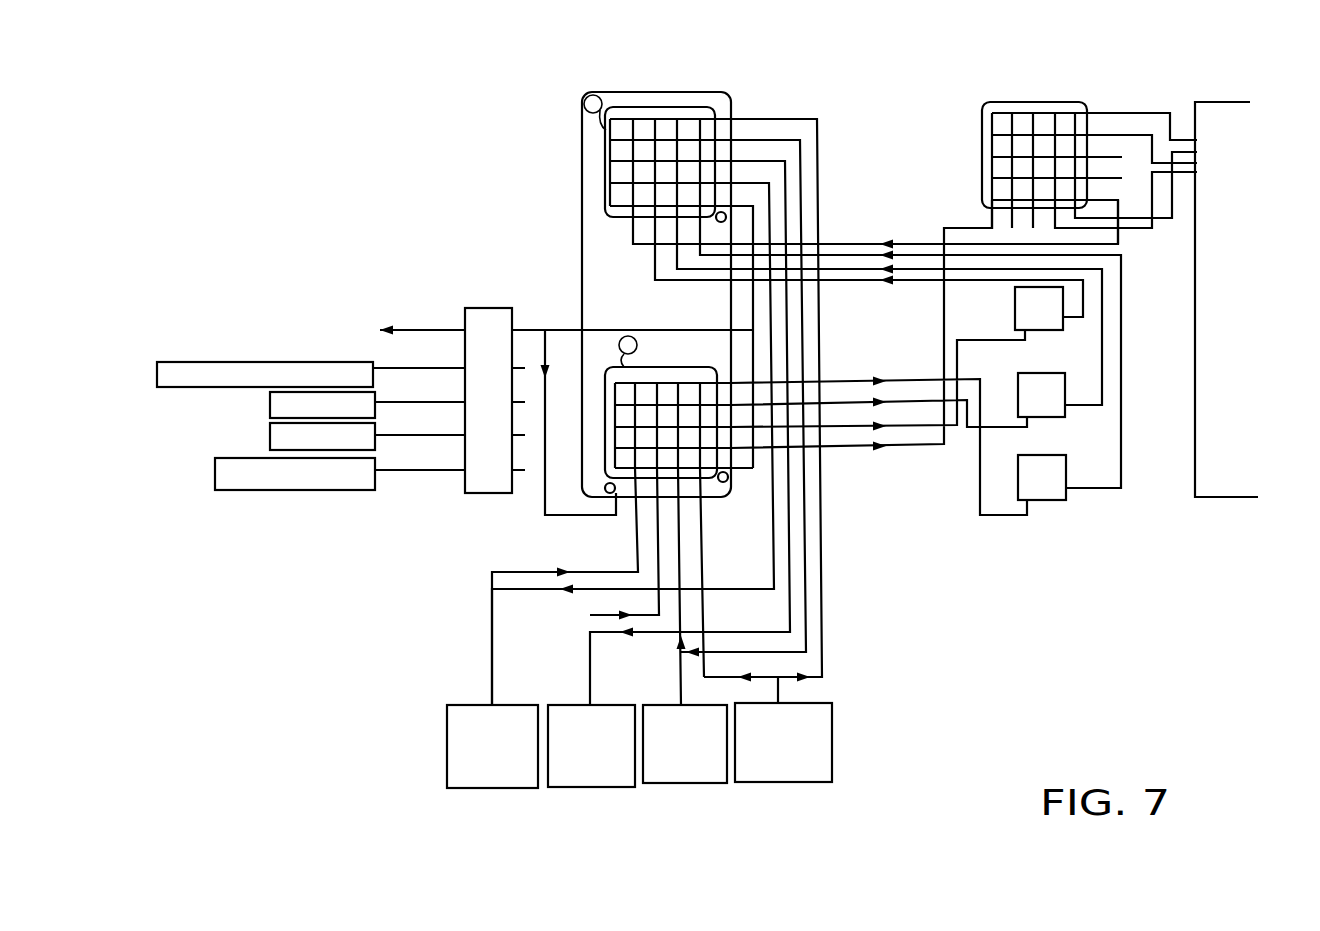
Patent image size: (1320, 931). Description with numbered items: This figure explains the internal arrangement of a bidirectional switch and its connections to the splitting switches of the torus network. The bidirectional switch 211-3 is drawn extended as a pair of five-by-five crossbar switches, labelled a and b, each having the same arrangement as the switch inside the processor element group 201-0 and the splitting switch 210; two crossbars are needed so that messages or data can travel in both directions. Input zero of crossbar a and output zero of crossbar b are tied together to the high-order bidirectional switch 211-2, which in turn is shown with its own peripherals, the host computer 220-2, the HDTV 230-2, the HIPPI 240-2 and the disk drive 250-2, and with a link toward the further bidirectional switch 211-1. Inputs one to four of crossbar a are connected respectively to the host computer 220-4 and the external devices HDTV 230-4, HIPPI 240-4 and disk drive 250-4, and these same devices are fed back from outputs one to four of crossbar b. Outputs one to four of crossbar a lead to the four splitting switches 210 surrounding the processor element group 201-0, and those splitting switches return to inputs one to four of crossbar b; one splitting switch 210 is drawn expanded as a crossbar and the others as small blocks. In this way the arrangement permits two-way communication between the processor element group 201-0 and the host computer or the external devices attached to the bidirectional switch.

The bidirectional switch 211-1 is at (330, 316).
The high-order bidirectional switch 211-2 is at (483, 308).
The bidirectional switch 211-3 is at (585, 97).
The splitting switch 210 is at (1066, 476).
The processor element group 201-0 is at (1212, 102).
The host computer 220-2 is at (376, 370).
The HDTV 230-2 is at (376, 405).
The HIPPI 240-2 is at (376, 437).
The disk drive 250-2 is at (376, 471).
The host computer 220-4 is at (520, 789).
The HDTV 230-4 is at (593, 789).
The HIPPI 240-4 is at (705, 784).
The disk drive 250-4 is at (768, 783).